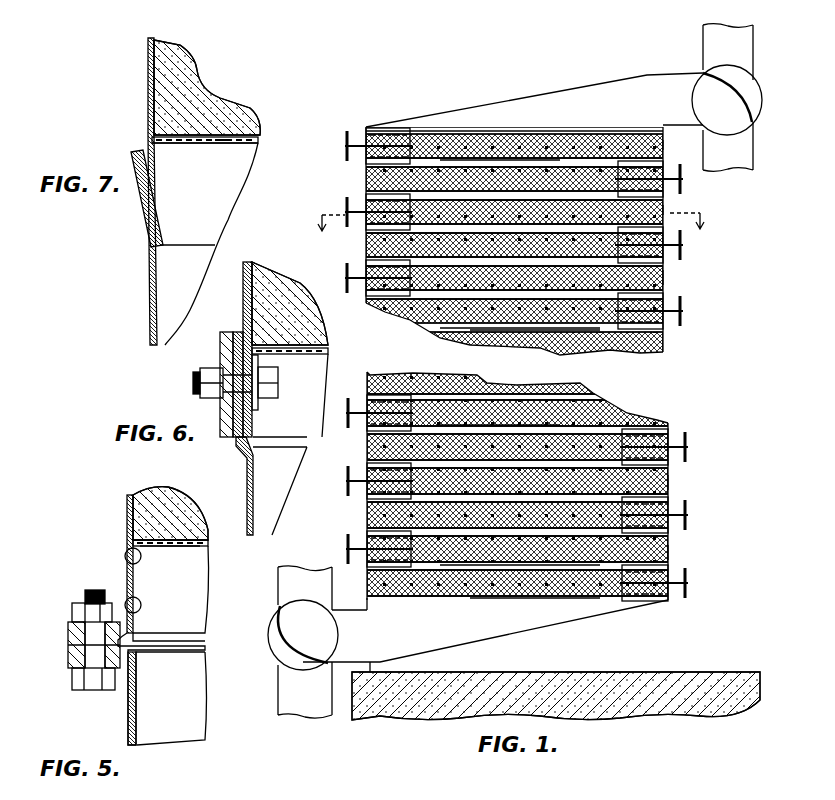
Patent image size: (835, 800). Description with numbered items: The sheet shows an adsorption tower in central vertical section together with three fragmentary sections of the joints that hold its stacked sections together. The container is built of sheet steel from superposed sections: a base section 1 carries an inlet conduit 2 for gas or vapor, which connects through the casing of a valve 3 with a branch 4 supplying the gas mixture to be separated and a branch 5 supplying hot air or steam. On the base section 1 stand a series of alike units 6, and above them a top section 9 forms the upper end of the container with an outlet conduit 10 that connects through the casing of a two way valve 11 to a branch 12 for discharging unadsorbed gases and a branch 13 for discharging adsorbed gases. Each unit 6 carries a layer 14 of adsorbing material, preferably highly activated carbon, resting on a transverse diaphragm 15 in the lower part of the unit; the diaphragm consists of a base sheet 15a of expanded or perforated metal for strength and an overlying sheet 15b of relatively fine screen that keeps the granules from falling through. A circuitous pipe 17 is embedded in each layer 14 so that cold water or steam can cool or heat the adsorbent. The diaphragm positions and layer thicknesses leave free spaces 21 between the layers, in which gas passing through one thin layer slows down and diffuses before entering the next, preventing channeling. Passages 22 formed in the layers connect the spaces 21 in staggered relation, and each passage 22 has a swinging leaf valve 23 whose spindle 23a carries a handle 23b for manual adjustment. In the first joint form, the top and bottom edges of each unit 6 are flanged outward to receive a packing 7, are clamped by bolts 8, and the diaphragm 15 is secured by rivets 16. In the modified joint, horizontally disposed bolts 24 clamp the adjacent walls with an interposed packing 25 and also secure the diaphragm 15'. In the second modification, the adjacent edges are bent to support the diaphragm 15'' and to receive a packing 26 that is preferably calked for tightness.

In FIG. 1, the base section 1 is at (678, 648).
In FIG. 1, the inlet conduit 2 is at (355, 618).
In FIG. 1, the valve 3 is at (272, 638).
In FIG. 1, the branch 4 is at (283, 592).
In FIG. 1, the branch 5 is at (290, 690).
In FIG. 1, the unit 6 is at (672, 270).
In FIG. 7, the unit 6 is at (148, 76).
In FIG. 6, the unit 6 is at (245, 290).
In FIG. 5, the unit 6 is at (127, 510).
In FIG. 5, the packing 7 is at (70, 646).
In FIG. 5, the bolt 8 is at (75, 672).
In FIG. 1, the top section 9 is at (428, 127).
In FIG. 1, the outlet conduit 10 is at (548, 92).
In FIG. 1, the two way valve 11 is at (752, 100).
In FIG. 1, the branch 12 is at (748, 153).
In FIG. 1, the branch 13 is at (745, 42).
In FIG. 1, the layer of adsorbing material 14 is at (490, 140).
In FIG. 7, the layer of adsorbing material 14 is at (207, 87).
In FIG. 6, the layer of adsorbing material 14 is at (290, 303).
In FIG. 5, the layer of adsorbing material 14 is at (170, 502).
In FIG. 1, the diaphragm 15 is at (520, 478).
In FIG. 5, the diaphragm 15 is at (180, 568).
In FIG. 7, the base sheet 15a is at (258, 146).
In FIG. 5, the base sheet 15a is at (163, 548).
In FIG. 7, the sheet of relatively fine screen 15b is at (256, 134).
In FIG. 5, the sheet of relatively fine screen 15b is at (210, 546).
In FIG. 6, the diaphragm 15' is at (290, 369).
In FIG. 7, the diaphragm 15'' is at (217, 162).
In FIG. 5, the rivet 16 is at (124, 556).
In FIG. 1, the circuitous pipe 17 is at (590, 135).
In FIG. 1, the free space 21 is at (528, 160).
In FIG. 7, the free space 21 is at (209, 244).
In FIG. 6, the free space 21 is at (290, 444).
In FIG. 5, the free space 21 is at (171, 645).
In FIG. 1, the passage 22 is at (366, 185).
In FIG. 1, the swinging leaf valve 23 is at (382, 132).
In FIG. 1, the spindle 23a is at (631, 363).
In FIG. 1, the handle 23b is at (706, 319).
In FIG. 6, the bolt 24 is at (196, 386).
In FIG. 6, the packing 25 is at (232, 333).
In FIG. 7, the packing 26 is at (140, 153).